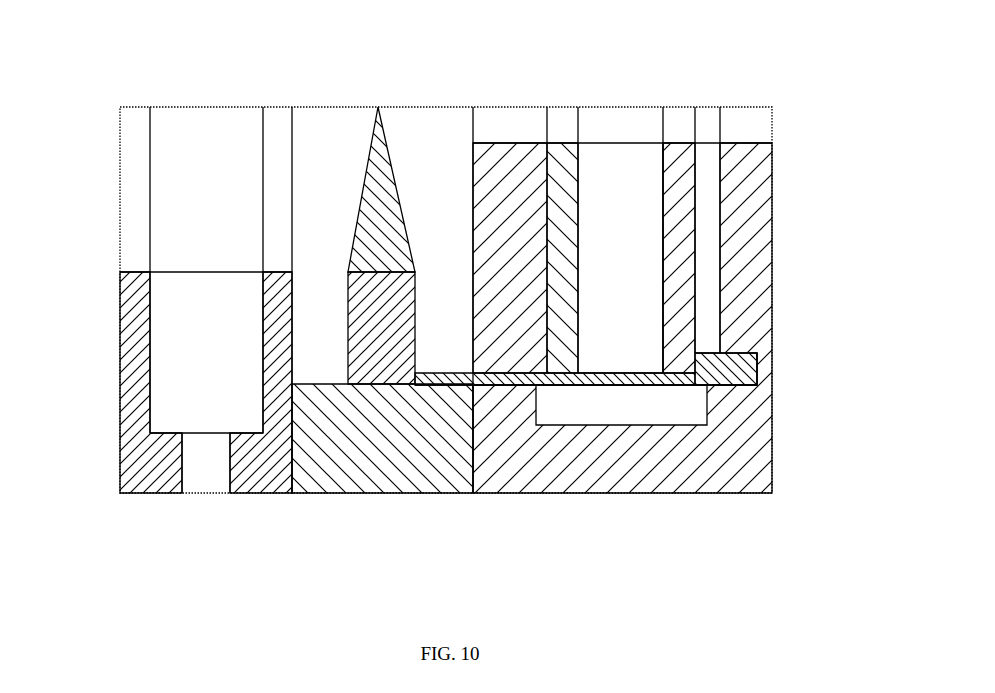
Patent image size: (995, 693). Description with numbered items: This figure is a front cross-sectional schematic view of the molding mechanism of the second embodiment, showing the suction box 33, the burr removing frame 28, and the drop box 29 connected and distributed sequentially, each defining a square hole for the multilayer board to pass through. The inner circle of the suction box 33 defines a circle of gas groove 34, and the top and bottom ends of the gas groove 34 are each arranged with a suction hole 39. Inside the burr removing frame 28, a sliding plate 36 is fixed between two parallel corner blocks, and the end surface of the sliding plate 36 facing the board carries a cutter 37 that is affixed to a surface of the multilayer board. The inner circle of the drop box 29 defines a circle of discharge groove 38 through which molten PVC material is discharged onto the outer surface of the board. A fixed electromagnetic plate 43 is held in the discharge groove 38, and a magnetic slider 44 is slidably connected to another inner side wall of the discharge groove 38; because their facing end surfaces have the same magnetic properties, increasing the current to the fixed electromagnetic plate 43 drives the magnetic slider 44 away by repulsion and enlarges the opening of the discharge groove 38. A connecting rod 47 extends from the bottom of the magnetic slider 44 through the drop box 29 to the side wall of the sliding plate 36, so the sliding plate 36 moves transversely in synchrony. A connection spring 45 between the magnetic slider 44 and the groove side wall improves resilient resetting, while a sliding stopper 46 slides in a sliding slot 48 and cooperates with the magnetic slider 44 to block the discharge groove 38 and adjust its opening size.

The burr removing frame 28 is at (330, 467).
The drop box 29 is at (737, 165).
The suction box 33 is at (132, 305).
The gas groove 34 is at (176, 318).
The sliding plate 36 is at (370, 375).
The cutter 37 is at (381, 160).
The discharge groove 38 is at (637, 163).
The suction hole 39 is at (200, 465).
The fixed electromagnetic plate 43 is at (557, 163).
The magnetic slider 44 is at (683, 317).
The connection spring 45 is at (713, 277).
The sliding stopper 46 is at (757, 385).
The connecting rod 47 is at (547, 387).
The sliding slot 48 is at (745, 352).